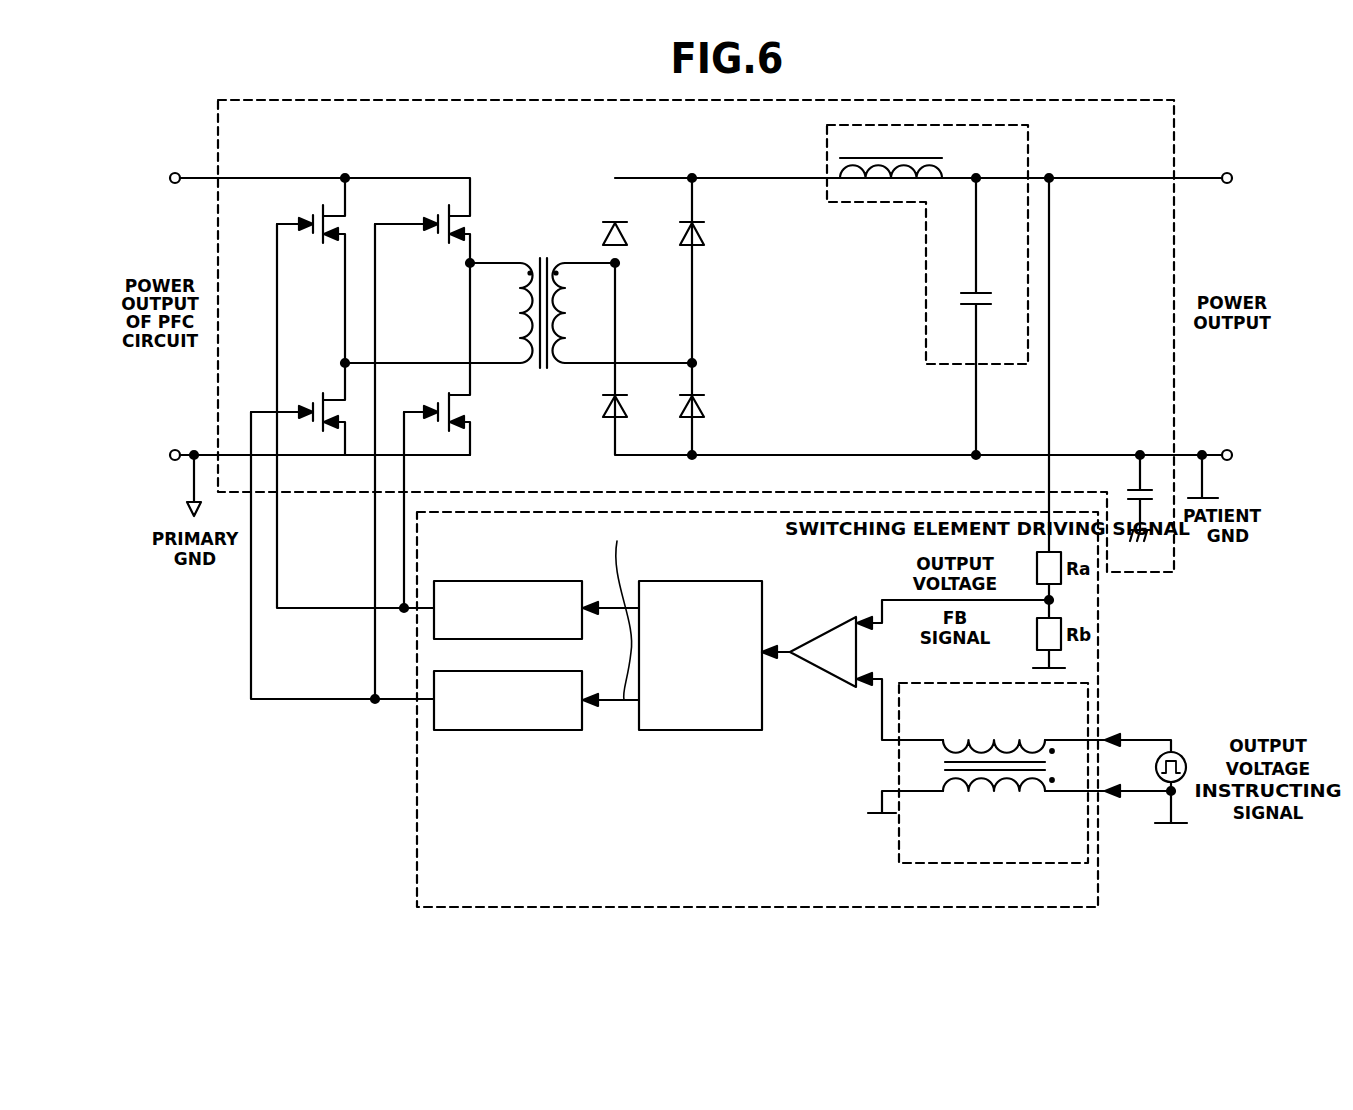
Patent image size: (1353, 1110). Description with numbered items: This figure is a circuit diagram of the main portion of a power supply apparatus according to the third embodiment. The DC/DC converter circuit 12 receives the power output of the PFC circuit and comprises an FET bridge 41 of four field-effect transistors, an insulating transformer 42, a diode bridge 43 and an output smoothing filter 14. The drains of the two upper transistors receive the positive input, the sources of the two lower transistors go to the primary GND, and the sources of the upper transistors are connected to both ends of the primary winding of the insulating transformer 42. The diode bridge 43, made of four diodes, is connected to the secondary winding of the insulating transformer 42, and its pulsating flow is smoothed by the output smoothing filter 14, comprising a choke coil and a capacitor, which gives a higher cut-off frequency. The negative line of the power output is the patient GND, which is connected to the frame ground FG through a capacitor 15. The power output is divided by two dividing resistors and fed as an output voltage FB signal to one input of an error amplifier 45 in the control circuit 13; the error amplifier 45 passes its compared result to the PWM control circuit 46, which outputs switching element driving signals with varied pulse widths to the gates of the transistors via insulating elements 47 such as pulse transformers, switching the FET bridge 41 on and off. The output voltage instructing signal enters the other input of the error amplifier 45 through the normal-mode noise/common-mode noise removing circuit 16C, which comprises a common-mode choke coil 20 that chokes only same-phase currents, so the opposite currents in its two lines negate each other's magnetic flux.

The DC/DC converter circuit 12 is at (1178, 143).
The control circuit 13 is at (414, 770).
The output smoothing filter 14 is at (926, 265).
The capacitor 15 is at (1137, 487).
The normal-mode noise/common-mode noise removing circuit 16C is at (897, 838).
The common-mode choke coil 20 is at (966, 793).
The FET bridge 41 is at (477, 162).
The insulating transformer 42 is at (548, 245).
The diode bridge 43 is at (659, 170).
The error amplifier 45 is at (826, 631).
The PWM control circuit 46 is at (700, 731).
The insulating element 47 is at (527, 581).